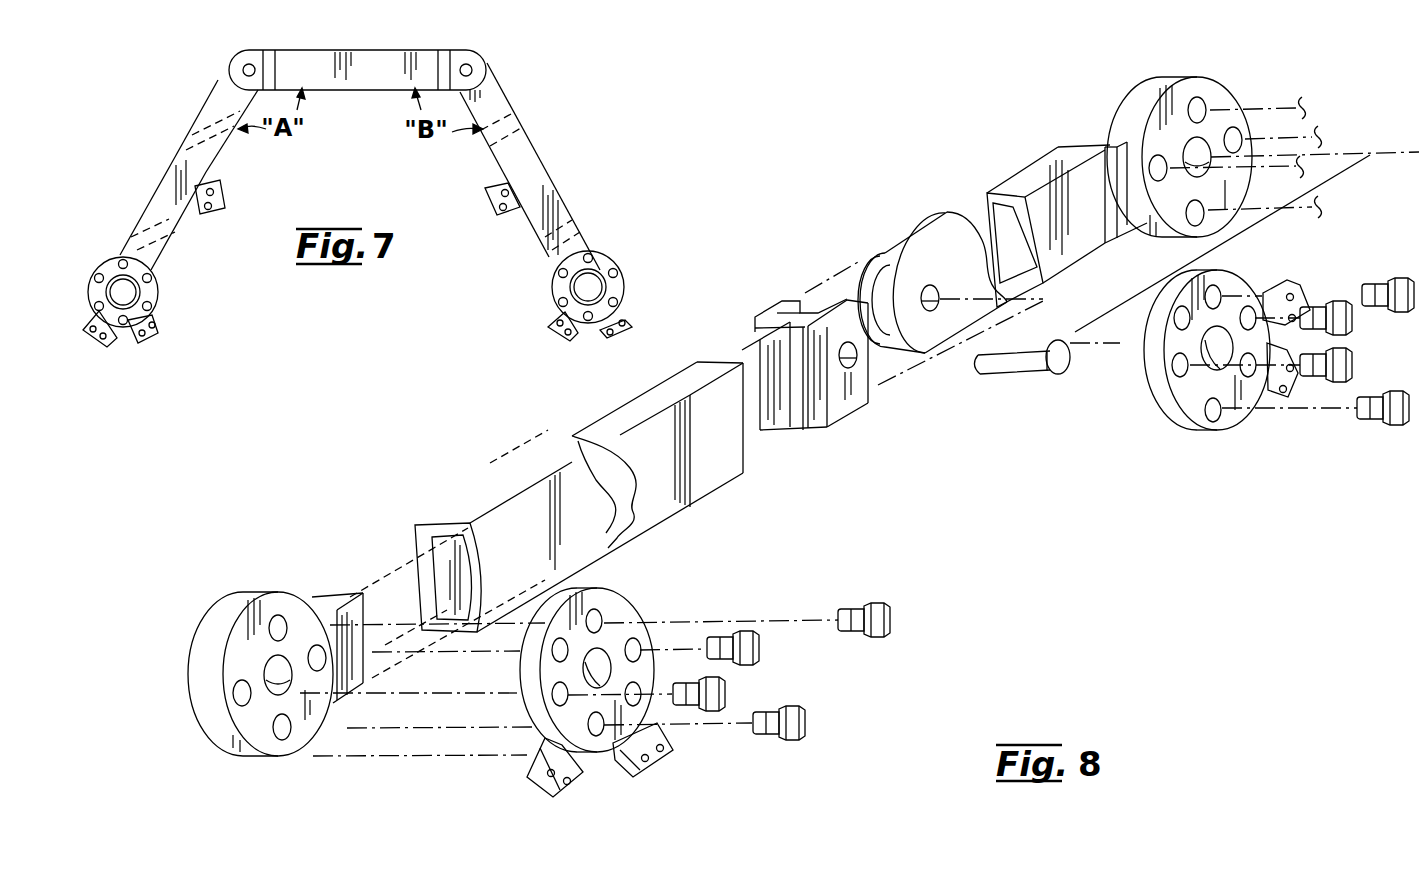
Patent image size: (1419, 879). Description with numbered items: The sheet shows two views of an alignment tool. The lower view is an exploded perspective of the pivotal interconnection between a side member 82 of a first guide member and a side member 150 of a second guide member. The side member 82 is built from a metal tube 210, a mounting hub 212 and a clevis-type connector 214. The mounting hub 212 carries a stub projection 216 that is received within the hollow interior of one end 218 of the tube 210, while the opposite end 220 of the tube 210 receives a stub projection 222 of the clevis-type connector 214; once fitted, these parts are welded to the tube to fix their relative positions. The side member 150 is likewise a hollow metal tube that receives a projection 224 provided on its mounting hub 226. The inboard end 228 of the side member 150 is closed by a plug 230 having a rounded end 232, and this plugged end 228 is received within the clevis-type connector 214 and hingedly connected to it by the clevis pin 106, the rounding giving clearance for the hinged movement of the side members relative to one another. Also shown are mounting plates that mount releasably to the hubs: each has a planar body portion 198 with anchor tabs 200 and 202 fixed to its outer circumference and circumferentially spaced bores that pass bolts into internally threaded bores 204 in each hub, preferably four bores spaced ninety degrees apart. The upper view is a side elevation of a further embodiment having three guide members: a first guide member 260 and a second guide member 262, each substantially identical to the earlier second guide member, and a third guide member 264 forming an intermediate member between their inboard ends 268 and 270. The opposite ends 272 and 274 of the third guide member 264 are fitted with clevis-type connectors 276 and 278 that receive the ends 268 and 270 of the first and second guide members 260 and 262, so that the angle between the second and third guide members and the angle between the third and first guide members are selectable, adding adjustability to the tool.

In FIG. 7, the first guide member 260 is at (532, 157).
In FIG. 7, the second guide member 262 is at (177, 177).
In FIG. 7, the third guide member 264 is at (370, 60).
In FIG. 7, the inboard end 268 is at (488, 75).
In FIG. 7, the inboard end 270 is at (225, 92).
In FIG. 7, the end 272 is at (428, 57).
In FIG. 7, the end 274 is at (299, 62).
In FIG. 7, the clevis-type connector 276 is at (484, 60).
In FIG. 7, the clevis-type connector 278 is at (248, 52).
In FIG. 8, the side member 82 is at (690, 490).
In FIG. 8, the clevis pin 106 is at (1027, 358).
In FIG. 8, the side member 150 is at (1042, 165).
In FIG. 8, the planar body portion 198 is at (628, 615).
In FIG. 8, the anchor tab 200 is at (590, 613).
In FIG. 8, the anchor tab 202 is at (892, 618).
In FIG. 8, the internally threaded bore 204 is at (225, 628).
In FIG. 8, the metal tube 210 is at (513, 482).
In FIG. 8, the mounting hub 212 is at (230, 606).
In FIG. 8, the clevis-type connector 214 is at (757, 315).
In FIG. 8, the stub projection 216 is at (346, 598).
In FIG. 8, the end 218 is at (444, 513).
In FIG. 8, the opposite end 220 is at (724, 467).
In FIG. 8, the stub projection 222 is at (780, 421).
In FIG. 8, the projection 224 is at (1136, 218).
In FIG. 8, the mounting hub 226 is at (1160, 80).
In FIG. 8, the inboard end 228 is at (929, 230).
In FIG. 8, the plug 230 is at (886, 256).
In FIG. 8, the rounded end 232 is at (850, 270).